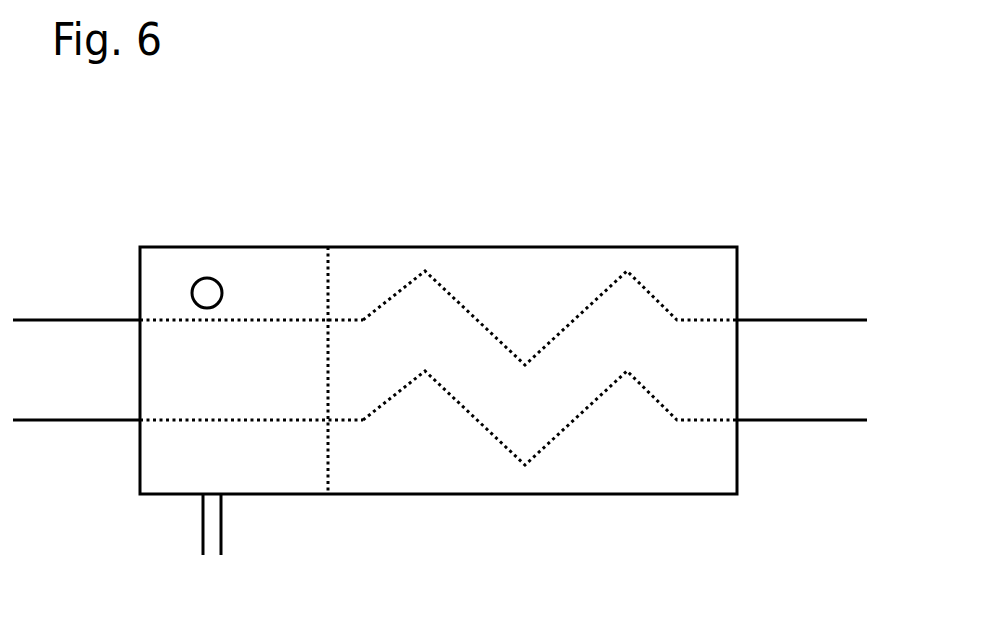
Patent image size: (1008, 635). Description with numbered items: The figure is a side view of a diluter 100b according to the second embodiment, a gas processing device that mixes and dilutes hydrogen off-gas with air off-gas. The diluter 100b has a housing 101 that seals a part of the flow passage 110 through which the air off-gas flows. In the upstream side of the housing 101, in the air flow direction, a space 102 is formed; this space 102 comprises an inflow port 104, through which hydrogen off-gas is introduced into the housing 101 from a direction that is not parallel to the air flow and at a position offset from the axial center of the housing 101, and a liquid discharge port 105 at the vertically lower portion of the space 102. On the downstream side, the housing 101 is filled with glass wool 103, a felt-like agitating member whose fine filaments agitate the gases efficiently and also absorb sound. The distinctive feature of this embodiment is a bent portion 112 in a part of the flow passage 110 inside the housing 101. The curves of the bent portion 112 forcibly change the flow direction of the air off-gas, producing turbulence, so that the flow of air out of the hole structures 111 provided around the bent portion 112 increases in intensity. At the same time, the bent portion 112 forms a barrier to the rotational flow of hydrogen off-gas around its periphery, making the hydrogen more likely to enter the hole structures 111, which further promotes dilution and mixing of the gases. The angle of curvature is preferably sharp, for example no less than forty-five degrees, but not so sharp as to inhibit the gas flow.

The diluter 100b is at (759, 577).
The housing 101 is at (723, 247).
The space 102 is at (300, 278).
The glass wool 103 is at (547, 285).
The inflow port 104 is at (198, 278).
The liquid discharge port 105 is at (221, 530).
The flow passage 110 is at (802, 327).
The hole structures 111 is at (590, 305).
The bent portion 112 is at (627, 272).